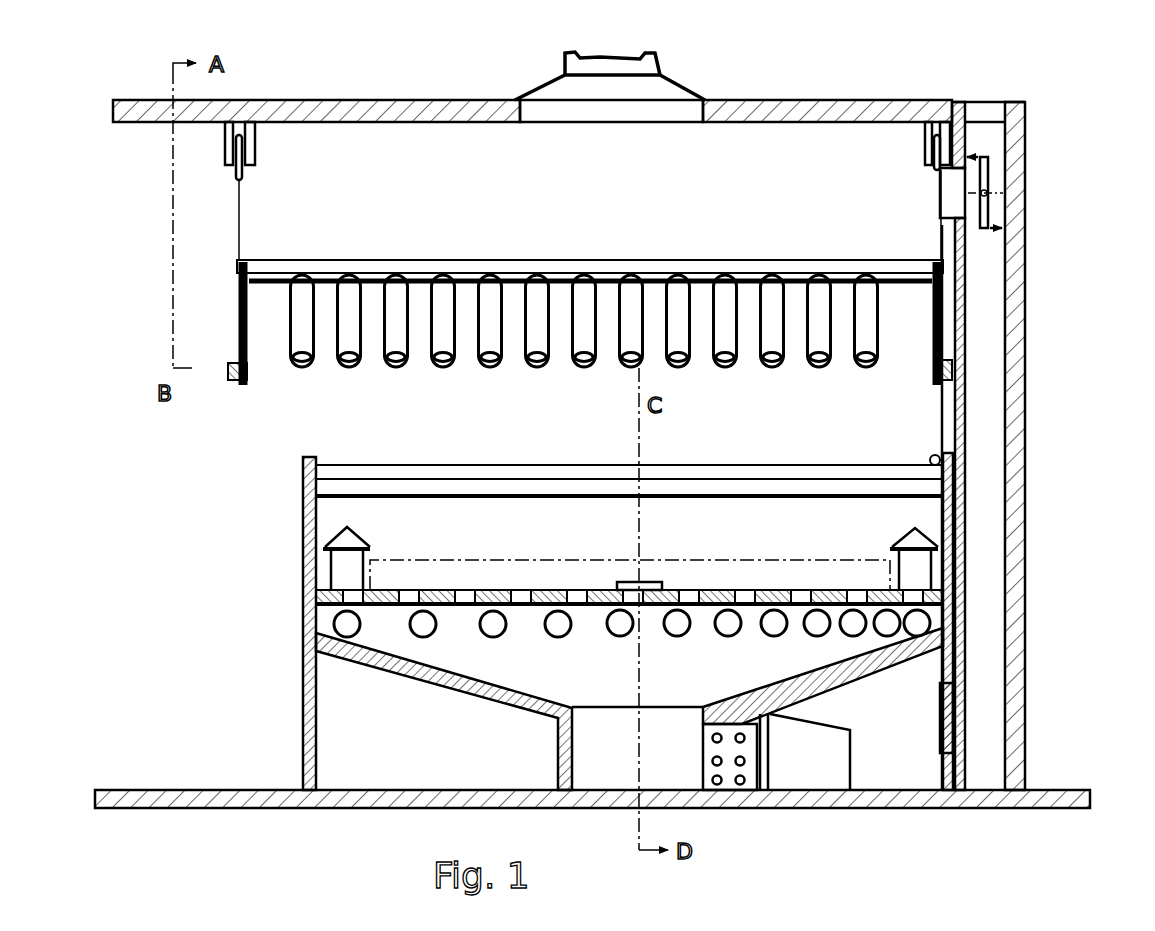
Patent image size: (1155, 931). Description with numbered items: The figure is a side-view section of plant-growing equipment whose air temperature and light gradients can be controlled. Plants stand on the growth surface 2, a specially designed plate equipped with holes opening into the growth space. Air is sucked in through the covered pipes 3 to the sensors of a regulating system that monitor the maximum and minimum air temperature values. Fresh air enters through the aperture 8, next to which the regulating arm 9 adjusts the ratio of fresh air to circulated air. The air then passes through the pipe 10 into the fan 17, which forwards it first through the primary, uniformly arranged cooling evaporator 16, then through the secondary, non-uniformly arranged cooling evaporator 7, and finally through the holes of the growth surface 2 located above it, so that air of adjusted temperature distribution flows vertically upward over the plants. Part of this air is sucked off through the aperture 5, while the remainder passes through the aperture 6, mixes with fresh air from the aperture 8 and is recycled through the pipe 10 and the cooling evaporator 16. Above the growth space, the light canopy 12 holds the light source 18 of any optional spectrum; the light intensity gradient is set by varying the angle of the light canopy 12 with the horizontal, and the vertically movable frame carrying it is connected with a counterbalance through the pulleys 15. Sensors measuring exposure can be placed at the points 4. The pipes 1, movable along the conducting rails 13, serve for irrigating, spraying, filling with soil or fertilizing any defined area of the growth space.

The pipes 1 is at (318, 487).
The growth surface 2 is at (318, 590).
The covered pipes 3 is at (345, 540).
The points 4 is at (650, 580).
The aperture 5 is at (560, 115).
The aperture 6 is at (950, 206).
The secondary cooling evaporator 7 is at (405, 632).
The aperture 8 is at (978, 112).
The regulating arm 9 is at (984, 172).
The pipe 10 is at (975, 642).
The light canopy 12 is at (243, 298).
The conducting rails 13 is at (962, 470).
The pulleys 15 is at (240, 170).
The primary cooling evaporator 16 is at (728, 768).
The fan 17 is at (832, 768).
The light source 18 is at (866, 340).